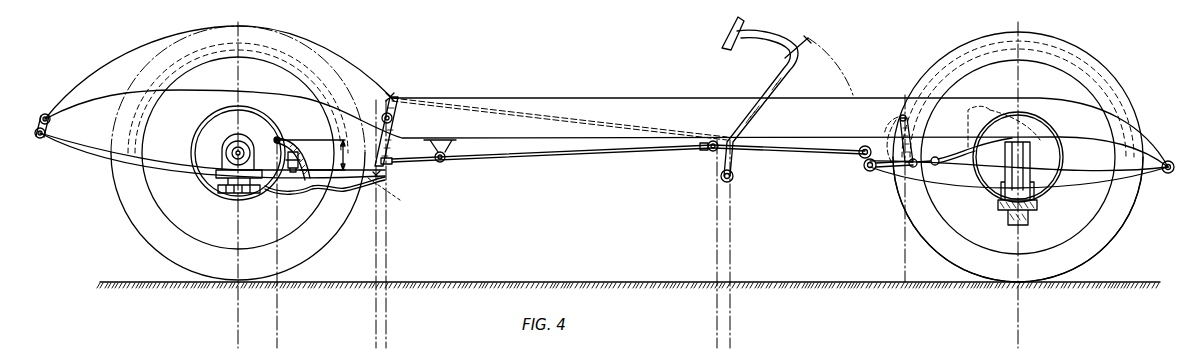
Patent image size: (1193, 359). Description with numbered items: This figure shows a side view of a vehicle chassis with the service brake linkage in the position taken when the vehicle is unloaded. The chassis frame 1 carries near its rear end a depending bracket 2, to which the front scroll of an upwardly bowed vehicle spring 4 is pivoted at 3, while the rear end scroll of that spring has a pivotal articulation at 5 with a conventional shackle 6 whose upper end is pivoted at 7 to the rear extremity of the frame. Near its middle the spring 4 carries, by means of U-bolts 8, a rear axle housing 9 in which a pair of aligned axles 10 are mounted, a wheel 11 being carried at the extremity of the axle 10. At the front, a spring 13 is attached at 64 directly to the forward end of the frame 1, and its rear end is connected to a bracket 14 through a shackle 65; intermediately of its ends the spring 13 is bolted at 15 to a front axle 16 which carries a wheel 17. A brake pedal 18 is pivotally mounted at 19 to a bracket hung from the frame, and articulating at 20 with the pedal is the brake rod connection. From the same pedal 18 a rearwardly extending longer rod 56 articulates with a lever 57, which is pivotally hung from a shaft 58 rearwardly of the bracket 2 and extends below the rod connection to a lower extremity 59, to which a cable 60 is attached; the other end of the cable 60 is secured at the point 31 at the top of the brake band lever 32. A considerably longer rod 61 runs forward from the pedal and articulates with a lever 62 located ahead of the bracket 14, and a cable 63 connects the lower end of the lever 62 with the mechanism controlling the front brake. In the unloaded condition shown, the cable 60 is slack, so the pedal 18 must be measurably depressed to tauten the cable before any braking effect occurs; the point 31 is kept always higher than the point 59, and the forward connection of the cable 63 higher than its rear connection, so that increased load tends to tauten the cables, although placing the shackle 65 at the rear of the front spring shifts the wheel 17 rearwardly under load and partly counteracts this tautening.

The chassis frame 1 is at (100, 78).
The depending bracket 2 is at (445, 150).
The pivot 3 is at (442, 163).
The vehicle spring 4 is at (92, 165).
The pivotal articulation 5 is at (38, 140).
The shackle 6 is at (37, 127).
The pivot 7 is at (46, 113).
The U-bolts 8 is at (208, 190).
The rear axle housing 9 is at (243, 145).
The axles 10 is at (234, 145).
The wheel 11 is at (142, 228).
The spring 13 is at (977, 197).
The bracket 14 is at (860, 146).
The bolted connection 15 is at (1060, 170).
The front axle 16 is at (1030, 220).
The wheel 17 is at (1110, 235).
The brake pedal 18 is at (783, 82).
The pivot 19 is at (734, 178).
The articulation 20 is at (710, 152).
The articulation point 31 is at (278, 137).
The brake band lever 32 is at (302, 188).
The rod 56 is at (590, 158).
The lever 57 is at (392, 144).
The shaft 58 is at (392, 115).
The lower extremity 59 is at (394, 193).
The cable 60 is at (340, 191).
The rod 61 is at (557, 112).
The lever 62 is at (898, 112).
The cable 63 is at (958, 156).
The attachment point 64 is at (1168, 176).
The shackle 65 is at (864, 166).